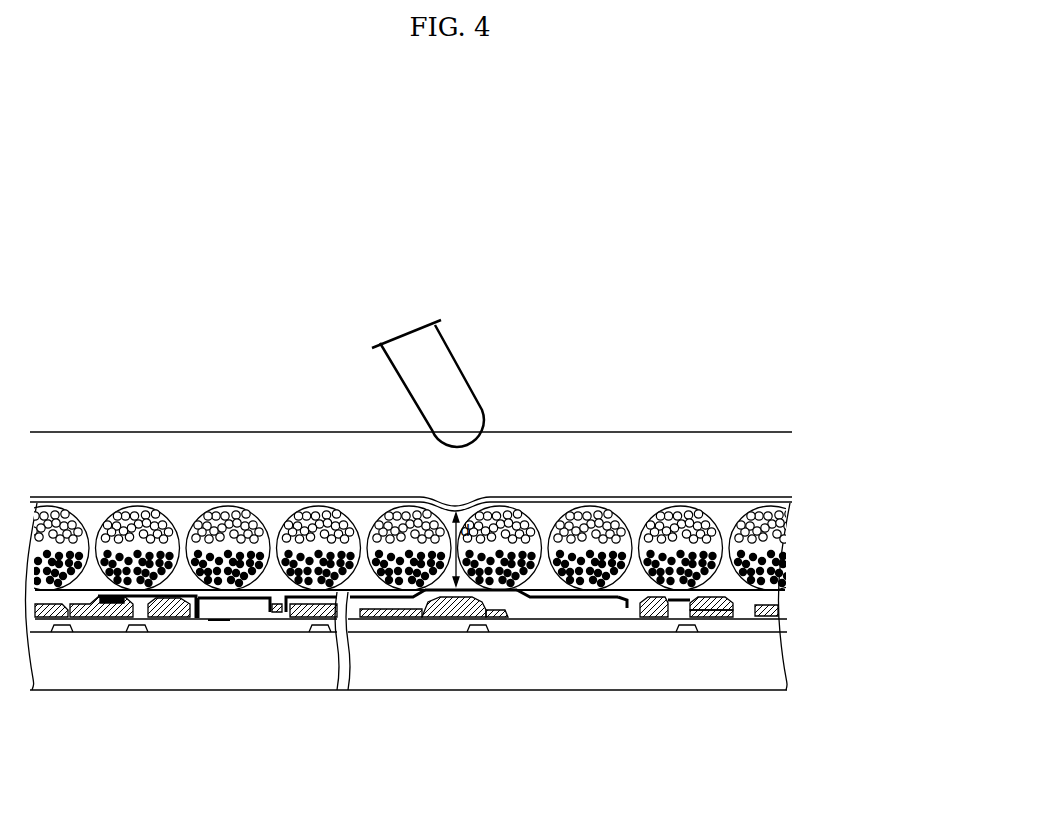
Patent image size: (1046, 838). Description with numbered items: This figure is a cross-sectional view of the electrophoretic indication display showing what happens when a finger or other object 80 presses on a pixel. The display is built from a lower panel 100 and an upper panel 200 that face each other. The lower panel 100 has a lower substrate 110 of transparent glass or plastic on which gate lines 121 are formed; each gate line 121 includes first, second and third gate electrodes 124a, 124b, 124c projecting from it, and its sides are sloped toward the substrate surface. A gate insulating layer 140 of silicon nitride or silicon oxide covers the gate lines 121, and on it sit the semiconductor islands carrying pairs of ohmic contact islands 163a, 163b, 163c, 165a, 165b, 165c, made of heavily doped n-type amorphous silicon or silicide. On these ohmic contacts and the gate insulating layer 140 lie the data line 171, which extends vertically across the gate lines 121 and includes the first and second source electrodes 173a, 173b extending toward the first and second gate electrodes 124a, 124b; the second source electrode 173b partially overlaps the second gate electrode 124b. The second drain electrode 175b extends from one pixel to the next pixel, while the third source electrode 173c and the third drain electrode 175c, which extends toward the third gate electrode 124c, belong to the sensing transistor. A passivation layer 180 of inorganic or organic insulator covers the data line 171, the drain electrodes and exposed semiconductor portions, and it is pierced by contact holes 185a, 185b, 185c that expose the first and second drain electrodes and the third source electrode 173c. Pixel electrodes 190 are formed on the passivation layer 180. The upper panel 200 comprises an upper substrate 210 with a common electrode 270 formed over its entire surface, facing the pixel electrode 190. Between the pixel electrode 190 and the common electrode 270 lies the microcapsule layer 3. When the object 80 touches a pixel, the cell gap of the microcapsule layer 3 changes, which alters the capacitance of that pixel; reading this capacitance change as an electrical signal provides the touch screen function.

The microcapsule layer 3 is at (802, 576).
The finger or other object 80 is at (460, 352).
The lower panel 100 is at (461, 593).
The lower substrate 110 is at (246, 680).
The gate line 121 is at (67, 633).
The first gate electrode 124a is at (138, 633).
The second gate electrode 124b is at (478, 633).
The third gate electrode 124c is at (687, 633).
The gate insulating layer 140 is at (378, 627).
The first ohmic contact island 163a is at (97, 600).
The second ohmic contact island 163b is at (408, 615).
The third ohmic contact island 163c is at (650, 600).
The first ohmic contact island 165a is at (157, 598).
The second ohmic contact island 165b is at (500, 597).
The third ohmic contact island 165c is at (718, 625).
The data line 171 is at (30, 598).
The first source electrode 173a is at (112, 598).
The second source electrode 173b is at (208, 622).
The third source electrode 173c is at (643, 615).
The second drain electrode 175b is at (325, 597).
The third drain electrode 175c is at (700, 600).
The passivation layer 180 is at (575, 613).
The contact hole 185a is at (198, 598).
The contact hole 185b is at (290, 622).
The contact hole 185c is at (600, 622).
The pixel electrode 190 is at (262, 596).
The upper panel 200 is at (470, 471).
The upper substrate 210 is at (786, 457).
The common electrode 270 is at (790, 501).